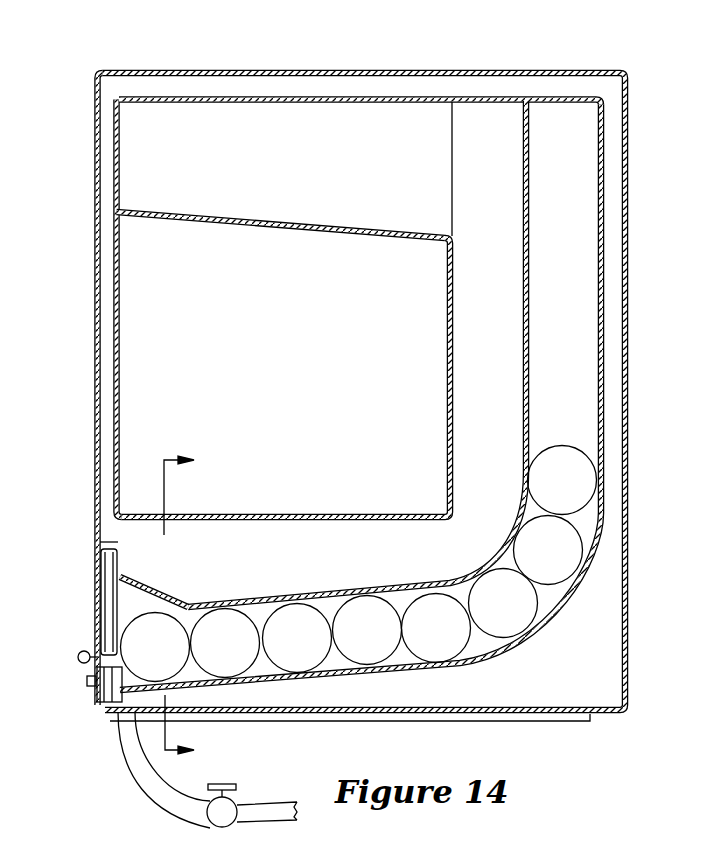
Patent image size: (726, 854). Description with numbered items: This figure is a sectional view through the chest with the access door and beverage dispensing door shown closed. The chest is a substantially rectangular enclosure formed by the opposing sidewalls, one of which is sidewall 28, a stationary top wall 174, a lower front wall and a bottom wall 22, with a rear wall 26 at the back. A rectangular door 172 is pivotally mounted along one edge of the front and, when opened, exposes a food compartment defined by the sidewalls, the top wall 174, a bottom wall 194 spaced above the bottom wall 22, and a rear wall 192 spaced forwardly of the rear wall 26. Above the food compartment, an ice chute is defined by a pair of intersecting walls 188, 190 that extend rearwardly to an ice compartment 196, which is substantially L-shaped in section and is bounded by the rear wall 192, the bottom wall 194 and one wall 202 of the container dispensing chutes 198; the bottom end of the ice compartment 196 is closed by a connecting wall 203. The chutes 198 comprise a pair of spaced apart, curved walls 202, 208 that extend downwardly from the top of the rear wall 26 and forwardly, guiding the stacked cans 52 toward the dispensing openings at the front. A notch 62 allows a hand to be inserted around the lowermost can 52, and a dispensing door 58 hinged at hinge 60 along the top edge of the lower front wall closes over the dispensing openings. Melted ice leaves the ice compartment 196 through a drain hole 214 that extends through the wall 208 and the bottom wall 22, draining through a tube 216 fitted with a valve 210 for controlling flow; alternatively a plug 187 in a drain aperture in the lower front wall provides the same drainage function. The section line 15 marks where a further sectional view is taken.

The section line 15 is at (195, 606).
The bottom wall 22 is at (574, 715).
The rear wall 26 is at (628, 530).
The sidewall 28 is at (248, 360).
The can 52 is at (508, 616).
The dispensing door 58 is at (97, 603).
The hinge 60 is at (78, 657).
The notch 62 is at (140, 598).
The door 172 is at (95, 240).
The top wall 174 is at (219, 70).
The plug 187 is at (88, 681).
The wall 188 is at (338, 215).
The wall 190 is at (232, 170).
The rear wall 192 is at (447, 316).
The bottom wall 194 is at (330, 514).
The ice compartment 196 is at (492, 138).
The container dispensing chute 198 is at (575, 130).
The curved wall 202 is at (523, 390).
The connecting wall 203 is at (122, 552).
The curved wall 208 is at (604, 240).
The valve 210 is at (237, 805).
The drain hole 214 is at (125, 697).
The tube 216 is at (140, 782).